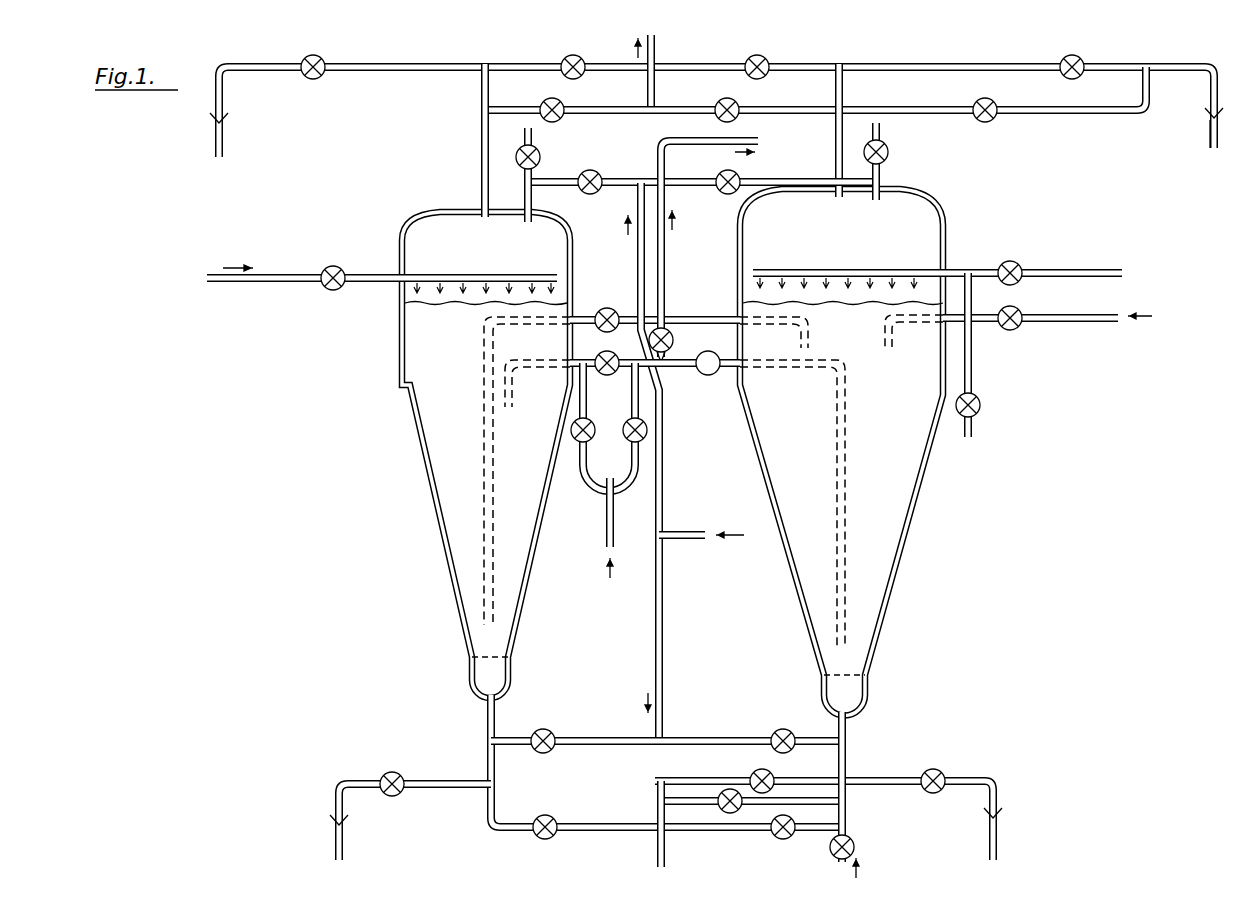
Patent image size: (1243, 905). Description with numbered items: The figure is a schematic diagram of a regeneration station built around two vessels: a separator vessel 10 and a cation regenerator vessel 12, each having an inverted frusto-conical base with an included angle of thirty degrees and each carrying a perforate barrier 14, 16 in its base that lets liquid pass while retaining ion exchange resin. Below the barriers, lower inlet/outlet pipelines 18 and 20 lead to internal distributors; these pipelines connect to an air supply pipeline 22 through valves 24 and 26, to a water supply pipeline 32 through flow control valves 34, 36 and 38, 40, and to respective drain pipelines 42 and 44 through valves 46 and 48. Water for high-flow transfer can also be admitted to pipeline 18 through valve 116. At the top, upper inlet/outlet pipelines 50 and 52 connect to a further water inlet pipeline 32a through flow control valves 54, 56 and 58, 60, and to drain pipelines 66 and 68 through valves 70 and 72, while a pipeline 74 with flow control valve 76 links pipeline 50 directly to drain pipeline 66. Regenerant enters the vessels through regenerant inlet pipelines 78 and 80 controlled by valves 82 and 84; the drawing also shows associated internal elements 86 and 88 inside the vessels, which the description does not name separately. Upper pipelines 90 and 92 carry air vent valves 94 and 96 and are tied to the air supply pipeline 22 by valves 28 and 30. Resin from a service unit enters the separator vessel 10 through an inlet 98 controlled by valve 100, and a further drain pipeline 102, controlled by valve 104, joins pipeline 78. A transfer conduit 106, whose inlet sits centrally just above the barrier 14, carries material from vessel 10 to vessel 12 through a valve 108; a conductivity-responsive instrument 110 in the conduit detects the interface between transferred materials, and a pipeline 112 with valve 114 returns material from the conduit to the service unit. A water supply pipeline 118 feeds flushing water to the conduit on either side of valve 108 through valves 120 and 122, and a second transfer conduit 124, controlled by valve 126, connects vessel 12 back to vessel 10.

The separator vessel 10 is at (912, 518).
The cation regenerator vessel 12 is at (448, 570).
The perforate barrier 14 is at (822, 682).
The perforate barrier 16 is at (512, 660).
The lower inlet/outlet pipeline 18 is at (848, 760).
The lower inlet/outlet pipeline 20 is at (486, 760).
The air supply pipeline 22 is at (666, 680).
The valve 24 is at (786, 730).
The valve 26 is at (553, 733).
The valve 28 is at (722, 193).
The valve 30 is at (596, 193).
The water supply pipeline 32 is at (656, 850).
The further water inlet pipeline 32a is at (656, 50).
The flow control valve 34 is at (758, 772).
The flow control valve 36 is at (726, 789).
The flow control valve 38 is at (775, 838).
The flow control valve 40 is at (556, 817).
The drain pipeline 42 is at (997, 796).
The drain pipeline 44 is at (342, 784).
The valve 46 is at (943, 769).
The valve 48 is at (392, 771).
The upper inlet/outlet pipeline 50 is at (836, 152).
The upper inlet/outlet pipeline 52 is at (482, 160).
The flow control valve 54 is at (766, 77).
The flow control valve 56 is at (720, 103).
The flow control valve 58 is at (579, 58).
The flow control valve 60 is at (544, 103).
The drain pipeline 66 is at (1210, 97).
The drain pipeline 68 is at (224, 101).
The valve 70 is at (1065, 57).
The valve 72 is at (314, 80).
The pipeline 74 is at (1068, 115).
The flow control valve 76 is at (991, 121).
The regenerant inlet pipeline 78 is at (1086, 270).
The regenerant inlet pipeline 80 is at (268, 285).
The valve 82 is at (1010, 261).
The valve 84 is at (335, 266).
The spray pipe 86 is at (840, 271).
The spray pipe 88 is at (497, 275).
The upper pipeline 90 is at (882, 130).
The upper pipeline 92 is at (524, 213).
The air vent valve 94 is at (889, 158).
The air vent valve 96 is at (541, 155).
The inlet 98 is at (1086, 325).
The valve 100 is at (1017, 329).
The further drain pipeline 102 is at (975, 376).
The valve 104 is at (979, 412).
The transfer conduit 106 is at (847, 468).
The valve 108 is at (605, 378).
The conductivity-responsive instrument 110 is at (708, 377).
The pipeline 112 is at (668, 272).
The valve 114 is at (676, 340).
The valve 116 is at (855, 846).
The water supply pipeline 118 is at (613, 518).
The valve 120 is at (591, 442).
The valve 122 is at (580, 475).
The second transfer conduit 124 is at (672, 318).
The valve 126 is at (607, 308).